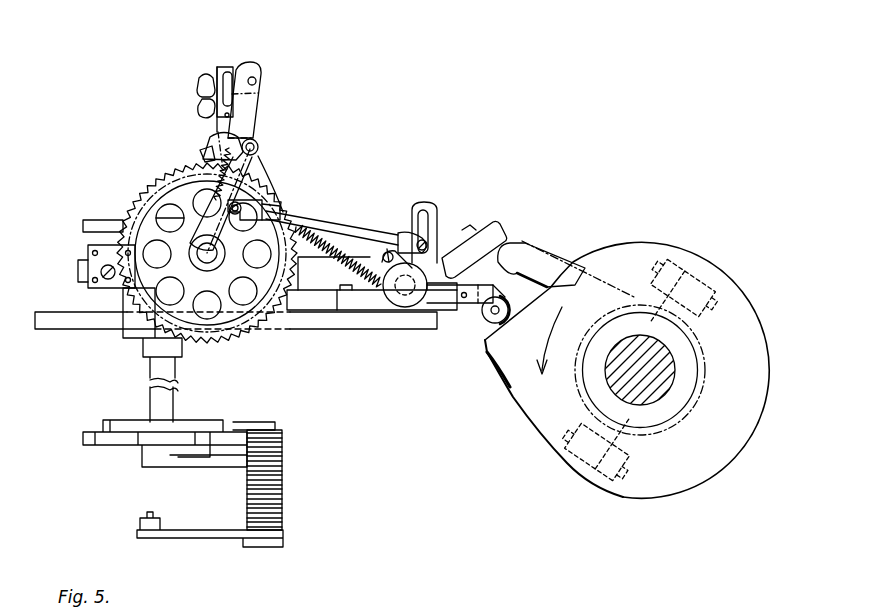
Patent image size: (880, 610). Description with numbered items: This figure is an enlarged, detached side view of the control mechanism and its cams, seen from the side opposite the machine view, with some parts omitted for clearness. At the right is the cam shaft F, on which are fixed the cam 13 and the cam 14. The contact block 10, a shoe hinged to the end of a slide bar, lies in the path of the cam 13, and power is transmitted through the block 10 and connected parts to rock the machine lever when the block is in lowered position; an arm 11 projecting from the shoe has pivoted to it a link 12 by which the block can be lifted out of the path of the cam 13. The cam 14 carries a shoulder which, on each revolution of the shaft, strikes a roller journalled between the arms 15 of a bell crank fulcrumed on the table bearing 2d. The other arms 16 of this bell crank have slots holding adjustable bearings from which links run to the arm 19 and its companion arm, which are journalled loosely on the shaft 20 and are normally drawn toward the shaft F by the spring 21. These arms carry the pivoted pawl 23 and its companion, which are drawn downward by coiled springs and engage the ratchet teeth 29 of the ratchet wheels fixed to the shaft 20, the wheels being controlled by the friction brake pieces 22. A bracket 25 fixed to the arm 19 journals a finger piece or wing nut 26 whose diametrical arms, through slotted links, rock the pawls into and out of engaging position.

The contact block 10 is at (445, 262).
The arm 11 is at (378, 300).
The link 12 is at (390, 252).
The cam 13 is at (550, 268).
The cam 14 is at (653, 250).
The arms of bell crank 15 is at (437, 300).
The arms of bell crank 16 is at (433, 207).
The arm 19 is at (262, 95).
The shaft 20 is at (208, 258).
The spring 21 is at (368, 250).
The friction brake pieces 22 is at (118, 278).
The pawl 23 is at (203, 143).
The bracket 25 is at (230, 74).
The finger piece or wing nut 26 is at (204, 74).
The ratchet teeth 29 is at (136, 194).
The table bearing 2d is at (385, 311).
The cam shaft F is at (657, 385).